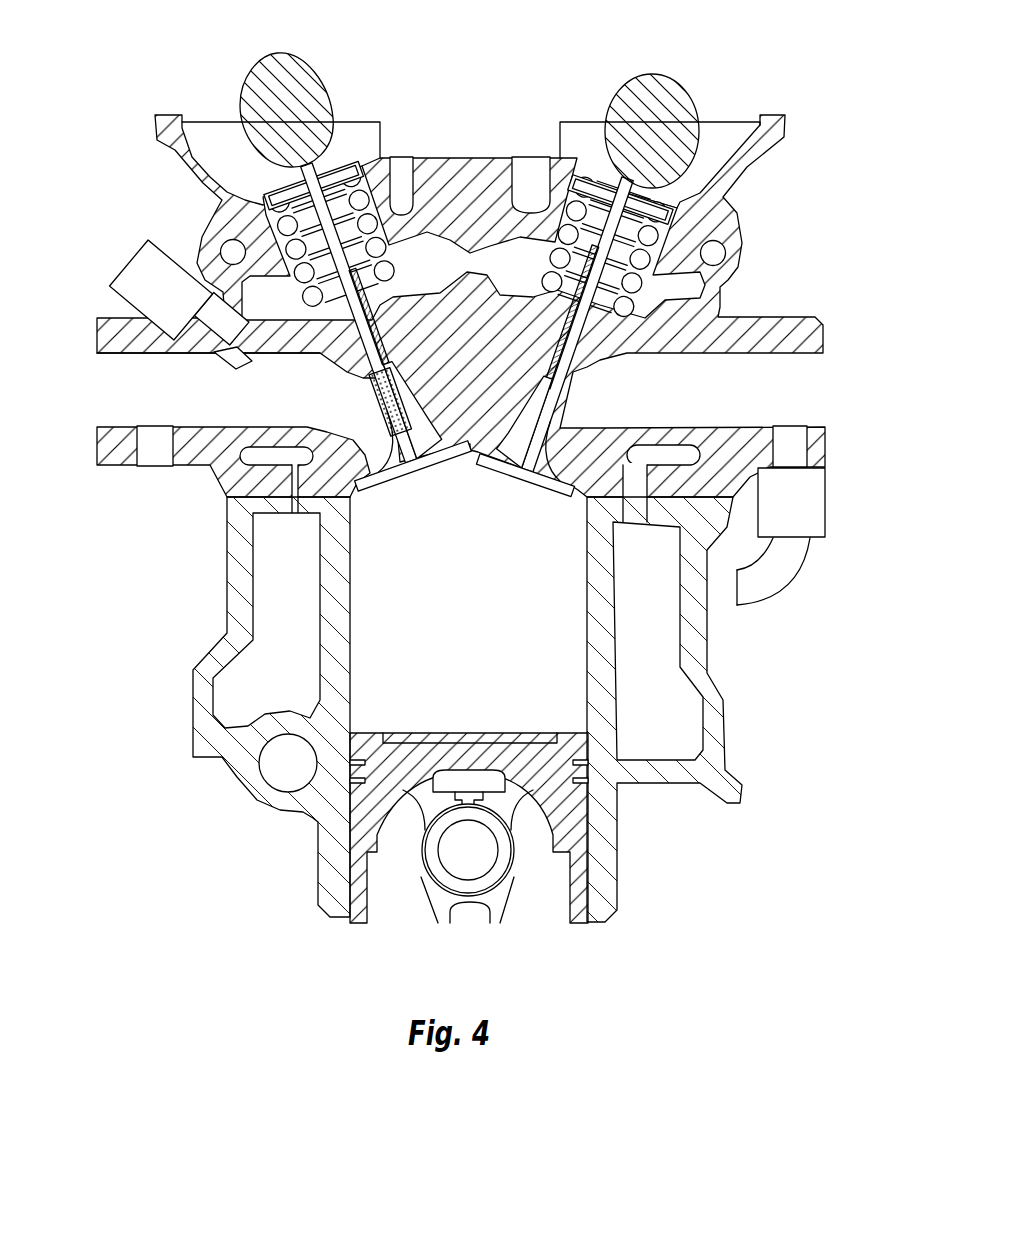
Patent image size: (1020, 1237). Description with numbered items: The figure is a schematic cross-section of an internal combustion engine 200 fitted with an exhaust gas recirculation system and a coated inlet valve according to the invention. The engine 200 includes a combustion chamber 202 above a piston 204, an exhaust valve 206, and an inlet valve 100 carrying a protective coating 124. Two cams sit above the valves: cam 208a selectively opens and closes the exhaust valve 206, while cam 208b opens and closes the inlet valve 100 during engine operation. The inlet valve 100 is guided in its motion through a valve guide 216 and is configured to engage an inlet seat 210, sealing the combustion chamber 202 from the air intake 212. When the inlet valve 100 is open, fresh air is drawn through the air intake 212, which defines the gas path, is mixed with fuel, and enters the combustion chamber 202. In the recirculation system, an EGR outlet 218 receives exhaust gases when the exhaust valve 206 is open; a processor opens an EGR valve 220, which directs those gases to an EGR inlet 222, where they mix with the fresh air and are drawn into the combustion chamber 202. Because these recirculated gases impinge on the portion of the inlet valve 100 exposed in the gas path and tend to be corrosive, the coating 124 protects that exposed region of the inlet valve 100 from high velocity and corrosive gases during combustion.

The inlet valve 100 is at (368, 156).
The coating 124 is at (380, 412).
The internal combustion engine 200 is at (824, 202).
The combustion chamber 202 is at (488, 652).
The piston 204 is at (533, 903).
The exhaust valve 206 is at (556, 348).
The cam 208a is at (656, 76).
The cam 208b is at (283, 55).
The inlet seat 210 is at (355, 492).
The air intake 212 is at (139, 396).
The valve guide 216 is at (155, 243).
The EGR outlet 218 is at (812, 448).
The EGR valve 220 is at (807, 511).
The EGR inlet 222 is at (152, 468).